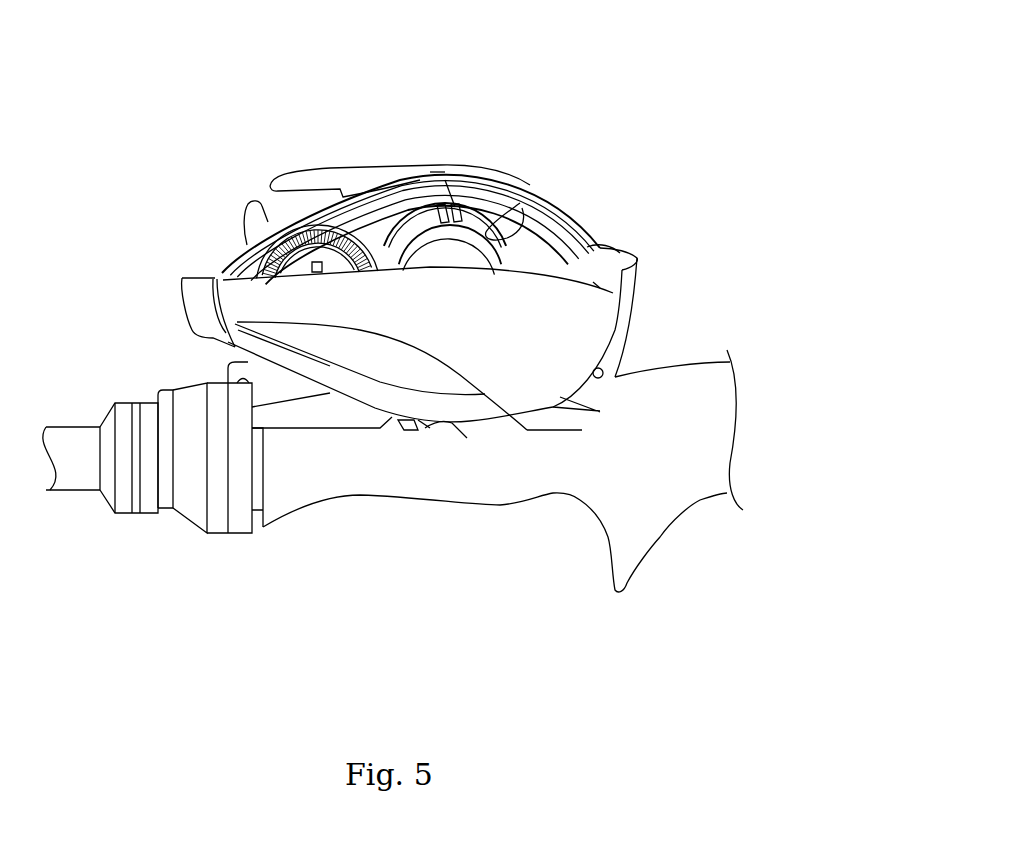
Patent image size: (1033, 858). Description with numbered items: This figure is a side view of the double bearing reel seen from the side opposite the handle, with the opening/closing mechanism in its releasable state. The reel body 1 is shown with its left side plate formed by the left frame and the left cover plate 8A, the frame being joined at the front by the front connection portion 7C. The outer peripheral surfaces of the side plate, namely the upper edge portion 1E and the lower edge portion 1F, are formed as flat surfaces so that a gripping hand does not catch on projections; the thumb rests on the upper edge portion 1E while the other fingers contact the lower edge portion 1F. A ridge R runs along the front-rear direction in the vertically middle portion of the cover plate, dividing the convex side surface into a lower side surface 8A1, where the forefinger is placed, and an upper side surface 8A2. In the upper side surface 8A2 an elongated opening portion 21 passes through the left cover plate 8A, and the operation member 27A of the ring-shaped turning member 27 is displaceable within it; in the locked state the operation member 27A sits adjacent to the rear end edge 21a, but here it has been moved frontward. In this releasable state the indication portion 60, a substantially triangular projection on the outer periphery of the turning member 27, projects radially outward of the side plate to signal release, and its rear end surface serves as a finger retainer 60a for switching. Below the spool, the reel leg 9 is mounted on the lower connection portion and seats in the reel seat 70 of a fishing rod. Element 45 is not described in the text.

The reel body 1 is at (572, 130).
The upper edge portion 1E is at (437, 173).
The lower edge portion 1F is at (425, 430).
The front connection portion 7C is at (192, 307).
The left cover plate 8A is at (600, 322).
The lower side surface 8A1 is at (567, 372).
The upper side surface 8A2 is at (587, 247).
The reel leg 9 is at (341, 418).
The opening portion 21 is at (405, 222).
The rear end edge 21a is at (498, 203).
The turning member 27 is at (385, 245).
The operation member 27A is at (450, 207).
The thumb rest 45 is at (280, 233).
The indication portion 60 is at (408, 432).
The finger retainer 60a is at (452, 423).
The reel seat 70 is at (493, 490).
The ridge R is at (593, 282).